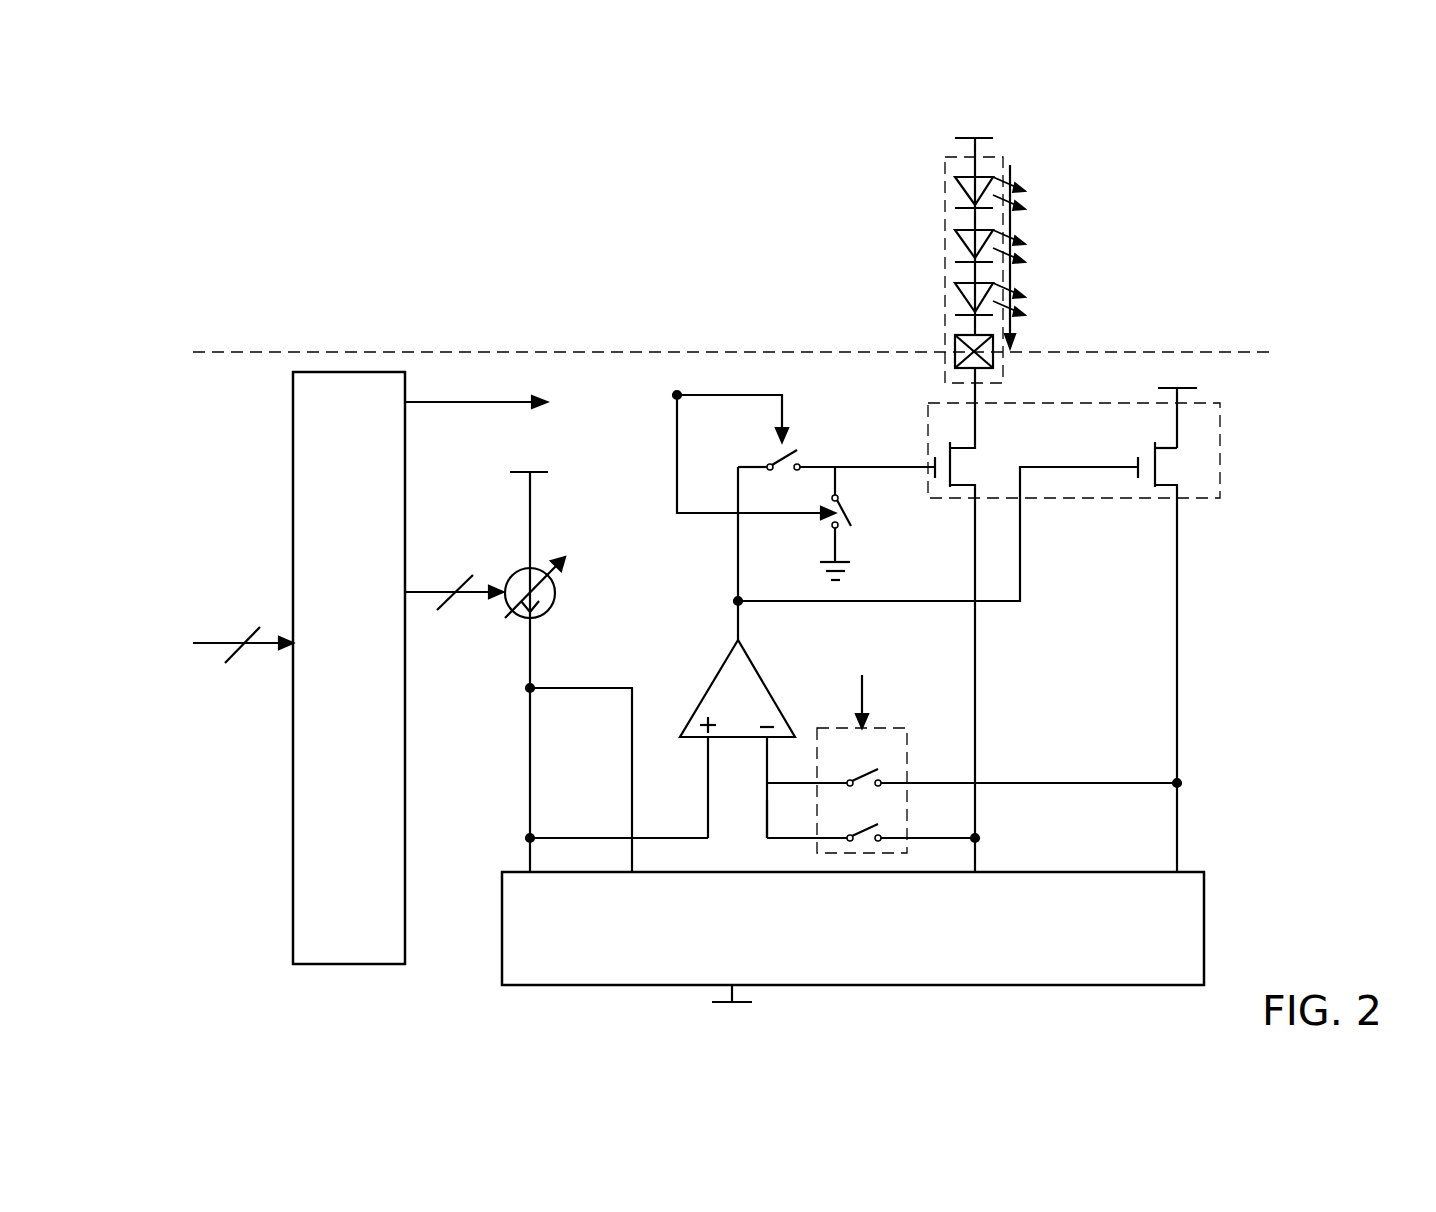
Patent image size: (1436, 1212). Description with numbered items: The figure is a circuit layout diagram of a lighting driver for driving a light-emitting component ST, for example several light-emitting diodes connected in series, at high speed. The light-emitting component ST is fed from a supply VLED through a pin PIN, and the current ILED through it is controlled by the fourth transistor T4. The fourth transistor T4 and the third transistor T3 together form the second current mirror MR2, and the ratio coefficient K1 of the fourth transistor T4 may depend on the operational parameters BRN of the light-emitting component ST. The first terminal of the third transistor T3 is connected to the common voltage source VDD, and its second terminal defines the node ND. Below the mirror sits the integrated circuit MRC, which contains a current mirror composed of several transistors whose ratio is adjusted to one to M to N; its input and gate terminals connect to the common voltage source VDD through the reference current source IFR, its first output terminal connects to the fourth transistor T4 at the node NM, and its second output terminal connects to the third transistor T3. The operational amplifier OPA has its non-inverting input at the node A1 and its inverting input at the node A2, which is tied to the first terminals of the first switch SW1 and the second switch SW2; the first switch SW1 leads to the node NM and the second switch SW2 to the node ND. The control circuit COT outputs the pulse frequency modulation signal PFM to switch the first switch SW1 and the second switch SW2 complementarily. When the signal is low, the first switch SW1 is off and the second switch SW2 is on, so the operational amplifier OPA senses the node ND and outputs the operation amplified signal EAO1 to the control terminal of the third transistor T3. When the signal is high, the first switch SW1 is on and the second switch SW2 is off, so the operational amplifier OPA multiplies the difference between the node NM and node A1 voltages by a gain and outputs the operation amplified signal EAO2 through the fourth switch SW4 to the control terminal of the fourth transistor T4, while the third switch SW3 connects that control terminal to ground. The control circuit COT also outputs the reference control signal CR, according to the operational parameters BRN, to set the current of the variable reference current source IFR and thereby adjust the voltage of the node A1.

The control circuit COT is at (293, 462).
The pulse frequency modulation signal PFM is at (652, 545).
The operational parameters of the light-emitting component BRN is at (243, 627).
The reference control signal CR is at (454, 576).
The common voltage source VDD is at (854, 613).
The reference current source IFR is at (554, 587).
The node A1 is at (599, 838).
The node A2 is at (747, 827).
The operational amplifier OPA is at (750, 663).
The operation amplified signal EAO1 is at (936, 535).
The operation amplified signal EAO2 is at (882, 449).
The first switch SW1 is at (871, 817).
The second switch SW2 is at (972, 790).
The third switch SW3 is at (866, 523).
The fourth switch SW4 is at (836, 525).
The second current mirror MR2 is at (1220, 435).
The ratio coefficient K1 is at (1047, 420).
The third transistor T3 is at (1174, 657).
The fourth transistor T4 is at (972, 620).
The light-emitting component ST is at (945, 265).
The LED supply voltage VLED is at (977, 218).
The input pin PIN is at (955, 357).
The current of the light-emitting component ILED is at (1043, 256).
The node NM is at (1001, 840).
The node ND is at (1199, 787).
The integrated circuit MRC is at (1204, 930).